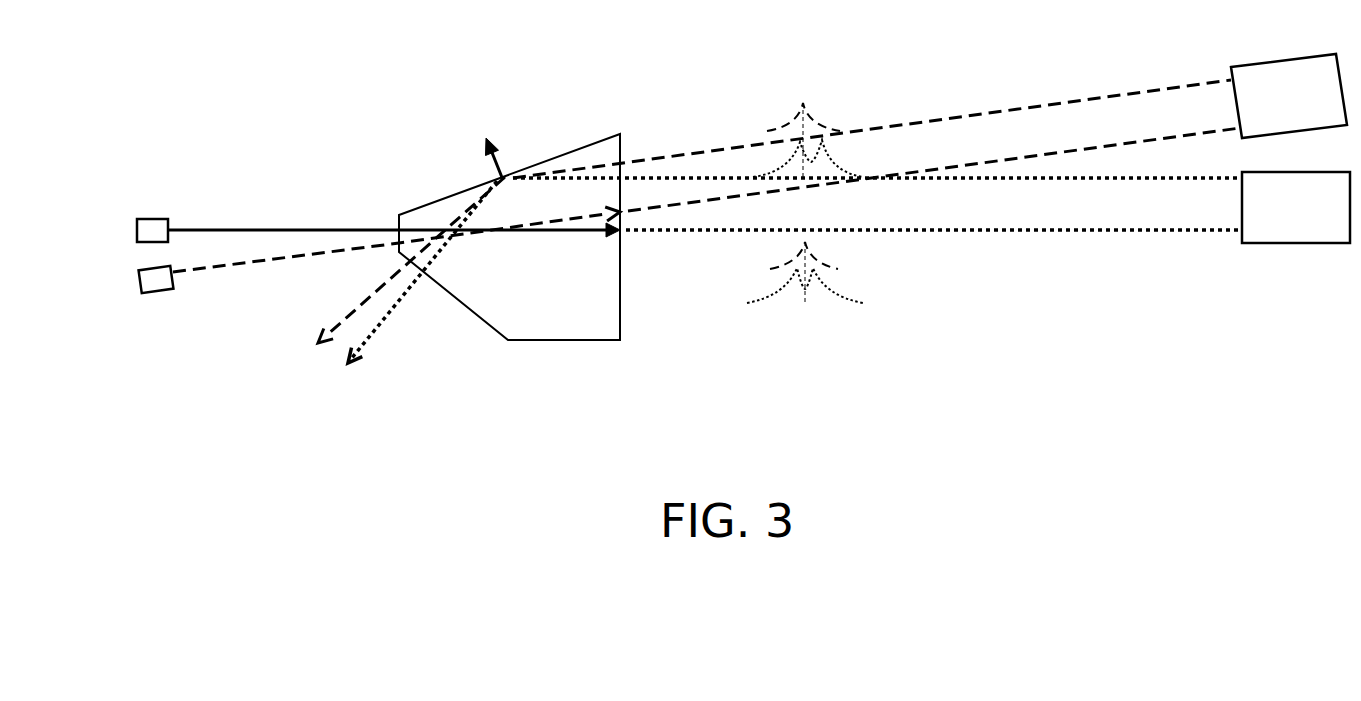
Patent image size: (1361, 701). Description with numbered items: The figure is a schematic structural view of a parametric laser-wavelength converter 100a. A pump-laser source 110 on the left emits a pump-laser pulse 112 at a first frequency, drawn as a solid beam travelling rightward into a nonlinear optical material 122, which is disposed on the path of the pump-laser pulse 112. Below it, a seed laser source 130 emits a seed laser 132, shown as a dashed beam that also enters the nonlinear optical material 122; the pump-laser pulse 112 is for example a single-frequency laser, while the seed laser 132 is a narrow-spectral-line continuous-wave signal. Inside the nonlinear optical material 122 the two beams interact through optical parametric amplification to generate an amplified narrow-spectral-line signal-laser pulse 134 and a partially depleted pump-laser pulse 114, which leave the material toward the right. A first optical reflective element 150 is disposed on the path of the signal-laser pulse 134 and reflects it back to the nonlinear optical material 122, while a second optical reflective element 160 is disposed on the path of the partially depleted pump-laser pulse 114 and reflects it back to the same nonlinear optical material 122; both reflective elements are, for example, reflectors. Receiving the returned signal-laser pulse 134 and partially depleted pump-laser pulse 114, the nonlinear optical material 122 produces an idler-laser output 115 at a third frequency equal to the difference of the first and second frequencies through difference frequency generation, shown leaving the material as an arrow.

The pump-laser source 110 is at (137, 227).
The pump-laser pulse 112 is at (193, 228).
The partially depleted pump-laser pulse 114 is at (658, 233).
The idler-laser output 115 is at (490, 172).
The nonlinear optical material 122 is at (563, 153).
The seed laser source 130 is at (139, 278).
The seed laser 132 is at (263, 260).
The signal-laser pulse 134 is at (1153, 140).
The first optical reflective element 150 is at (1278, 58).
The second optical reflective element 160 is at (1287, 243).
The parametric laser-wavelength converter 100a is at (1323, 356).